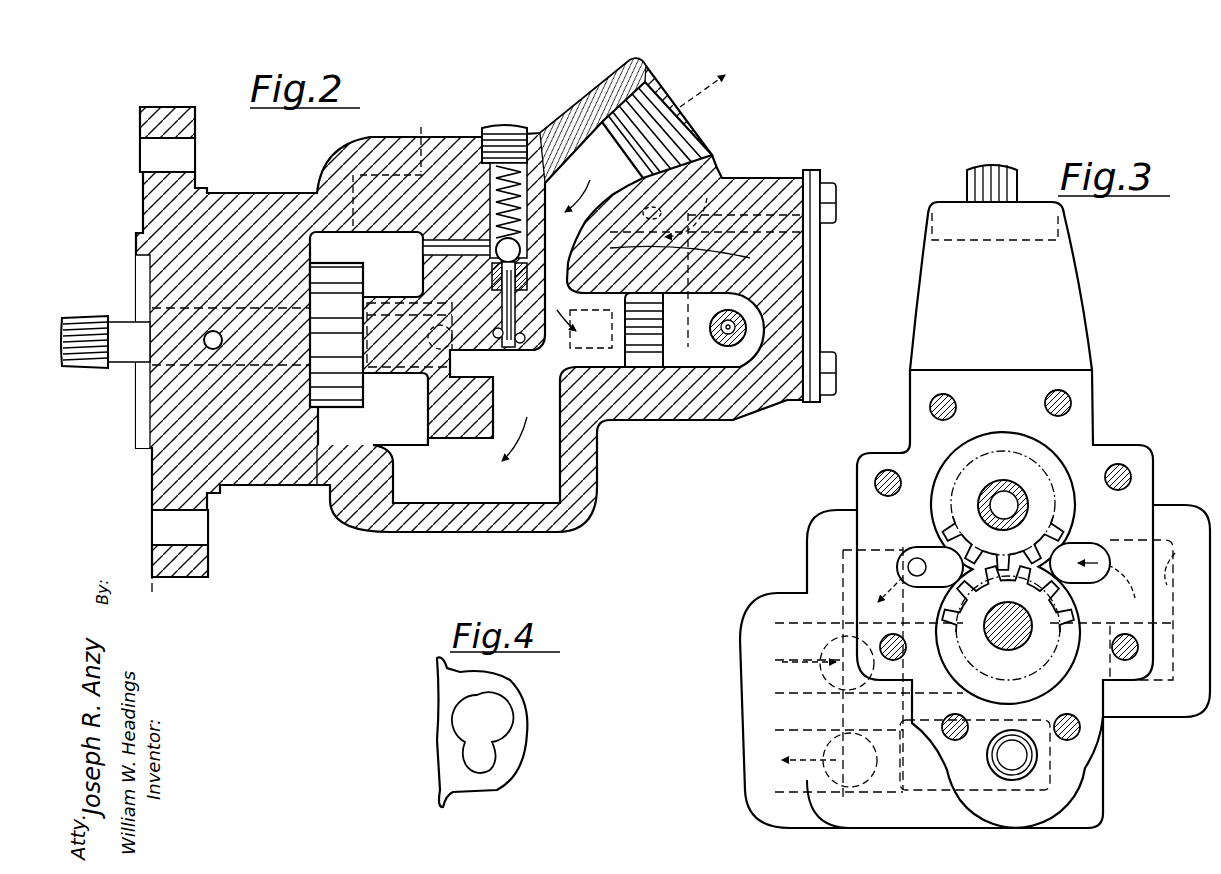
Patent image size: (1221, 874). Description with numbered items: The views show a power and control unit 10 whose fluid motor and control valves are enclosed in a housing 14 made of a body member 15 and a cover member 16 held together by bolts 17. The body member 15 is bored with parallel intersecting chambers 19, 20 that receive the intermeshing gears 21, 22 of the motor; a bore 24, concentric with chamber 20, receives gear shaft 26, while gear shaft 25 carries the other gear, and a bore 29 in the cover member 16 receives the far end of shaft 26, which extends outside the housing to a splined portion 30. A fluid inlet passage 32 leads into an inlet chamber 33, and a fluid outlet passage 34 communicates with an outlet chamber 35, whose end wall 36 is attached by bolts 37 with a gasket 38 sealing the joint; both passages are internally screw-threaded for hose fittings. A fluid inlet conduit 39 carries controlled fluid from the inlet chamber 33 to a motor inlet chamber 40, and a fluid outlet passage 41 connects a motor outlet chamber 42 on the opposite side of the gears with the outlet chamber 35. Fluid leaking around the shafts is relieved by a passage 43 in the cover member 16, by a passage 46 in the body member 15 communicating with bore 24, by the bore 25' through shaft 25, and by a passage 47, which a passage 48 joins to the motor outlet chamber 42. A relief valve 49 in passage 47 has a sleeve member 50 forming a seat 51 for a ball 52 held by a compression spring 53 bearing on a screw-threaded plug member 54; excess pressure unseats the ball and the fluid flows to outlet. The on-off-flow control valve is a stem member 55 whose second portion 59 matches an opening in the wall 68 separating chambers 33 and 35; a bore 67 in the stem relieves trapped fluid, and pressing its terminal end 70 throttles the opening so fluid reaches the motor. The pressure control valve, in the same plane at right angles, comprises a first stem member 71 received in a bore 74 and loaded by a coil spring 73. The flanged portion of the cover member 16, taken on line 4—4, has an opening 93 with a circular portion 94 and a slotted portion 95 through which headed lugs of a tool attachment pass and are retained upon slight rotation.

In FIG. 2, the section line 4 is at (150, 490).
In FIG. 3, the power and control unit 10 is at (1090, 283).
In FIG. 2, the housing 14 is at (583, 527).
In FIG. 3, the housing 14 is at (1188, 503).
In FIG. 2, the body member 15 is at (487, 533).
In FIG. 2, the cover member 16 is at (261, 195).
In FIG. 4, the cover member 16 is at (432, 670).
In FIG. 3, the bolts 17 is at (1072, 405).
In FIG. 3, the chamber 19 is at (1000, 432).
In FIG. 3, the chamber 20 is at (1060, 640).
In FIG. 3, the gear 21 is at (1005, 568).
In FIG. 2, the gear 22 is at (340, 407).
In FIG. 3, the gear 22 is at (1008, 623).
In FIG. 2, the bore 24 is at (391, 390).
In FIG. 3, the gear shaft 25 is at (975, 483).
In FIG. 3, the bore in gear shaft 25' is at (999, 471).
In FIG. 2, the gear shaft 26 is at (282, 304).
In FIG. 3, the gear shaft 26 is at (1008, 650).
In FIG. 2, the bore 29 is at (272, 368).
In FIG. 2, the splined portion 30 is at (86, 316).
In FIG. 2, the fluid inlet passage 32 is at (592, 173).
In FIG. 3, the fluid inlet passage 32 is at (810, 638).
In FIG. 2, the inlet chamber 33 is at (657, 368).
In FIG. 3, the inlet chamber 33 is at (965, 800).
In FIG. 2, the fluid outlet passage 34 is at (658, 210).
In FIG. 3, the fluid outlet passage 34 is at (812, 740).
In FIG. 2, the outlet chamber 35 is at (820, 346).
In FIG. 3, the outlet chamber 35 is at (1018, 722).
In FIG. 2, the end wall 36 is at (820, 248).
In FIG. 2, the bolts 37 is at (834, 186).
In FIG. 2, the gasket 38 is at (808, 182).
In FIG. 2, the fluid inlet conduit 39 is at (392, 516).
In FIG. 3, the fluid inlet conduit 39 is at (1188, 554).
In FIG. 2, the motor inlet chamber 40 is at (372, 442).
In FIG. 3, the motor inlet chamber 40 is at (1085, 546).
In FIG. 2, the fluid outlet passage 41 is at (442, 123).
In FIG. 3, the fluid outlet passage 41 is at (840, 566).
In FIG. 2, the motor outlet chamber 42 is at (405, 281).
In FIG. 3, the motor outlet chamber 42 is at (915, 548).
In FIG. 2, the passage 43 is at (223, 340).
In FIG. 2, the passage 46 is at (530, 401).
In FIG. 2, the passage 47 is at (560, 369).
In FIG. 2, the passage 48 is at (423, 248).
In FIG. 3, the passage 48 is at (919, 577).
In FIG. 2, the relief valve 49 is at (482, 213).
In FIG. 2, the sleeve member 50 is at (552, 269).
In FIG. 2, the seat 51 is at (492, 270).
In FIG. 2, the ball 52 is at (521, 249).
In FIG. 2, the compression spring 53 is at (491, 197).
In FIG. 2, the screw-threaded plug member 54 is at (507, 126).
In FIG. 2, the stem member 55 is at (729, 350).
In FIG. 3, the stem member 55 is at (962, 180).
In FIG. 2, the second portion of stem member 59 is at (742, 323).
In FIG. 2, the bore in stem member 67 is at (733, 318).
In FIG. 2, the wall 68 is at (672, 302).
In FIG. 3, the terminal end 70 is at (1005, 162).
In FIG. 2, the first stem member 71 is at (641, 352).
In FIG. 3, the coil spring 73 is at (1012, 780).
In FIG. 3, the bore 74 is at (1025, 758).
In FIG. 2, the opening 93 is at (198, 150).
In FIG. 4, the opening 93 is at (512, 712).
In FIG. 4, the circular portion 94 is at (457, 707).
In FIG. 4, the slotted portion 95 is at (490, 753).